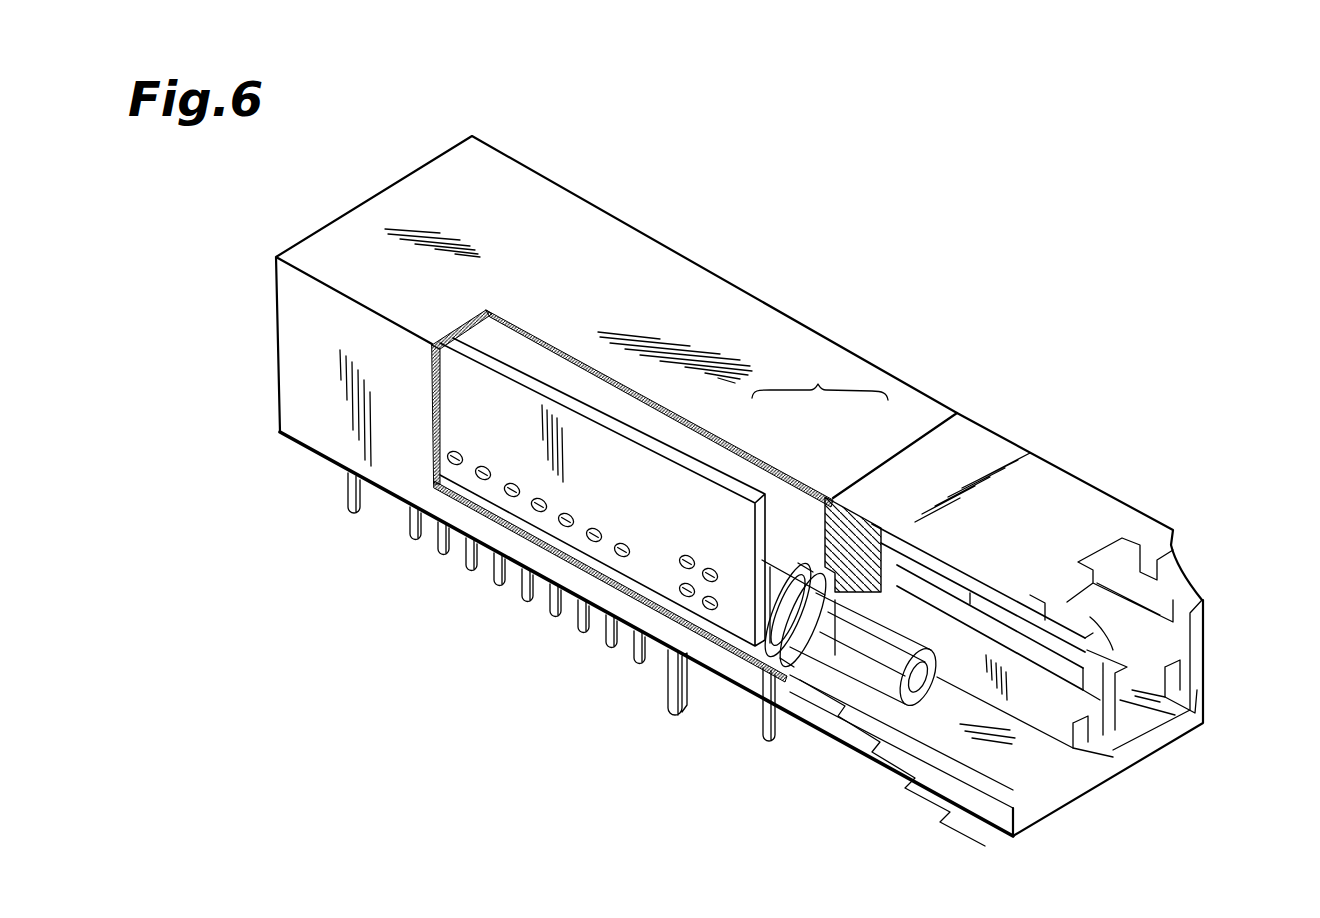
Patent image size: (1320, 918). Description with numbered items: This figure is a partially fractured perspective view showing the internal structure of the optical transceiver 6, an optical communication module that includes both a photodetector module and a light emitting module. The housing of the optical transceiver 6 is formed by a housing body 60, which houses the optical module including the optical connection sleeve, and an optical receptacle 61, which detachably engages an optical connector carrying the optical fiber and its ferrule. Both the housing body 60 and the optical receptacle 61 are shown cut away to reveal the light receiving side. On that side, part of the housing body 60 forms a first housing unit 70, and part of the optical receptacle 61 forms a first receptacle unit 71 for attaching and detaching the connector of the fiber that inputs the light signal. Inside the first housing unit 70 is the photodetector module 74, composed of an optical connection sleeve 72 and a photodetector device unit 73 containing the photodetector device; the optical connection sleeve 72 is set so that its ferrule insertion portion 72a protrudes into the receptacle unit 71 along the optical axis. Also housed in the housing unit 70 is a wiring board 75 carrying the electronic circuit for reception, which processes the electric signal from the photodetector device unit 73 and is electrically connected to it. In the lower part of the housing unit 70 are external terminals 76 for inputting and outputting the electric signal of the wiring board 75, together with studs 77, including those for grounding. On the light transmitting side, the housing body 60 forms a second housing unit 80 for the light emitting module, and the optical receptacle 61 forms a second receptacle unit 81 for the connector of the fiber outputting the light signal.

The optical transceiver 6 is at (920, 338).
The housing body 60 is at (612, 252).
The optical receptacle 61 is at (1083, 500).
The first housing unit 70 is at (578, 392).
The first receptacle unit 71 is at (1058, 781).
The optical connection sleeve 72 is at (853, 595).
The ferrule insertion portion 72a is at (872, 693).
The photodetector device unit 73 is at (790, 545).
The photodetector module 74 is at (820, 378).
The wiring board 75 is at (497, 412).
The external terminals 76 is at (658, 682).
The studs 77 is at (352, 513).
The second housing unit 80 is at (706, 320).
The second receptacle unit 81 is at (1150, 730).